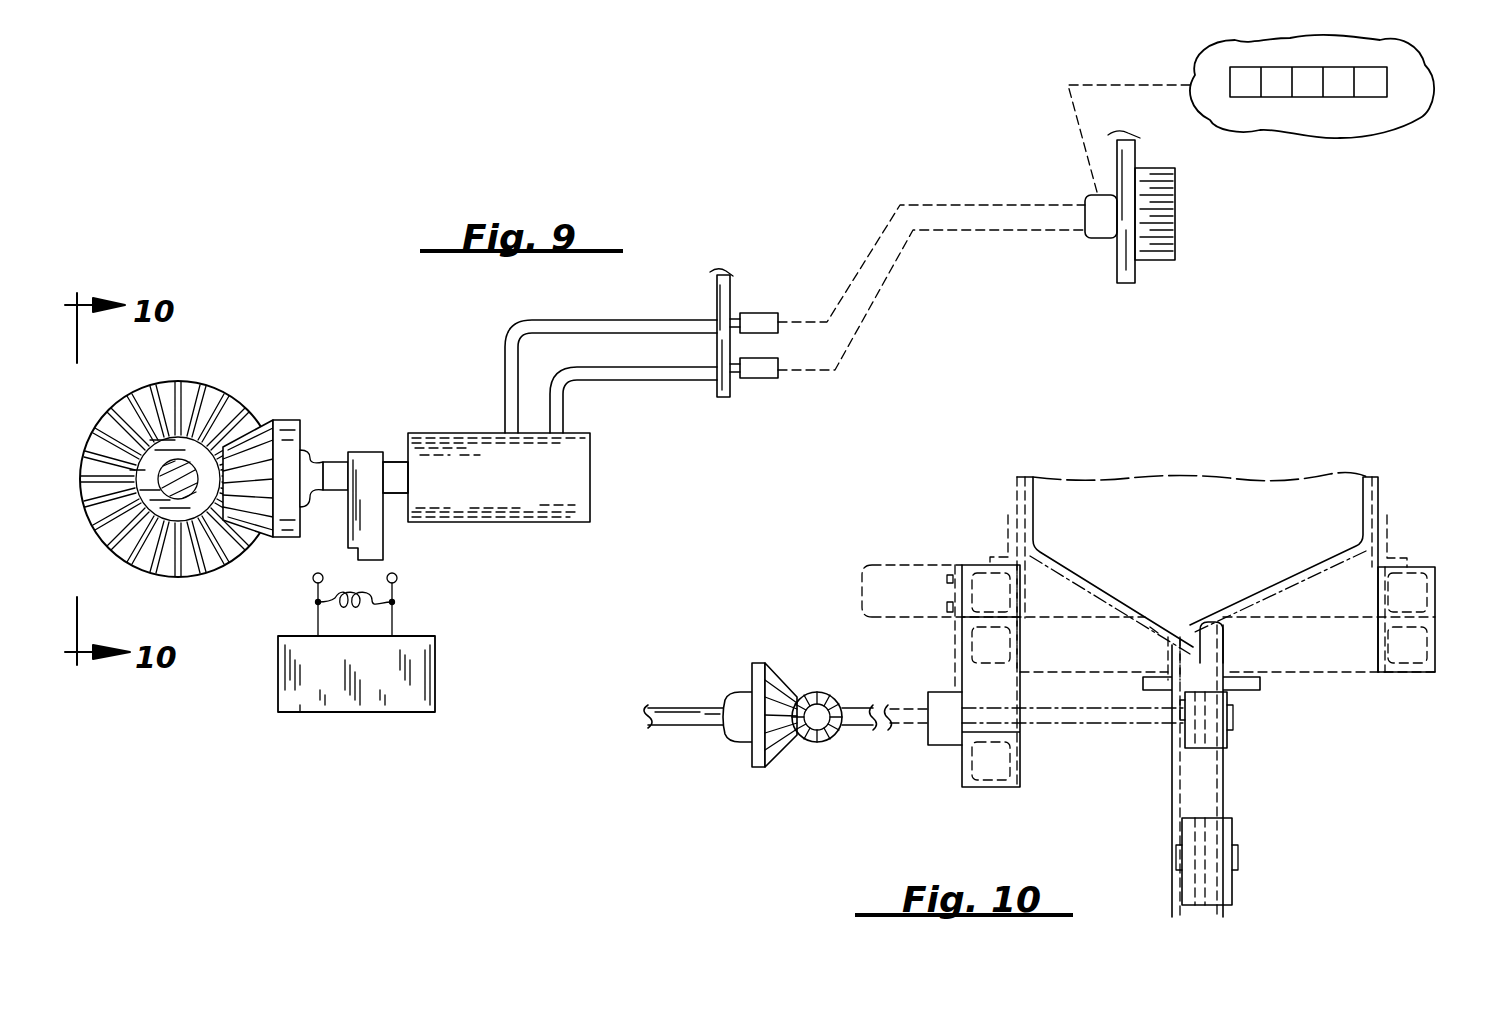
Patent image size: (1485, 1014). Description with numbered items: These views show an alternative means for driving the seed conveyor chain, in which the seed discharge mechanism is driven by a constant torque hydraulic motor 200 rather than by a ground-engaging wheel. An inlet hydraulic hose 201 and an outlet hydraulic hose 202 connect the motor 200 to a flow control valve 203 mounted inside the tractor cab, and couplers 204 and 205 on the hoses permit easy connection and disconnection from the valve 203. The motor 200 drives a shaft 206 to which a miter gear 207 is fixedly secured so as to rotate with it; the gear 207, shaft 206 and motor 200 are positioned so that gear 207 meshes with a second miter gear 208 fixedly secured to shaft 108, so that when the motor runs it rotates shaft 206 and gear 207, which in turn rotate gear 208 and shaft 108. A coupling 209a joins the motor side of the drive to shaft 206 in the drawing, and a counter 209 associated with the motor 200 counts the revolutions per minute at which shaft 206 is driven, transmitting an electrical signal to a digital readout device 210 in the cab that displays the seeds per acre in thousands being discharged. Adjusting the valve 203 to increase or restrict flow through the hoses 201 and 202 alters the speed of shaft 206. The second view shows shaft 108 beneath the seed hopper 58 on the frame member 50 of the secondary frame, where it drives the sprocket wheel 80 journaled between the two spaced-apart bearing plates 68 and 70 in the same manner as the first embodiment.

In FIG. 9, the shaft 108 is at (167, 467).
In FIG. 10, the shaft 108 is at (663, 710).
In FIG. 9, the second miter gear 208 is at (213, 392).
In FIG. 10, the second miter gear 208 is at (765, 765).
In FIG. 9, the miter gear 207 is at (260, 530).
In FIG. 10, the miter gear 207 is at (805, 745).
In FIG. 9, the coupling 209a is at (362, 453).
In FIG. 9, the shaft 206 is at (392, 493).
In FIG. 9, the constant torque hydraulic motor 200 is at (508, 522).
In FIG. 9, the inlet hydraulic hose 201 is at (607, 320).
In FIG. 9, the outlet hydraulic hose 202 is at (608, 380).
In FIG. 9, the coupler 204 is at (748, 313).
In FIG. 9, the coupler 205 is at (747, 378).
In FIG. 9, the flow control valve 203 is at (1177, 210).
In FIG. 9, the digital readout device 210 is at (1277, 98).
In FIG. 9, the counter 209 is at (335, 712).
In FIG. 10, the frame member 50 is at (980, 565).
In FIG. 10, the seed hopper 58 is at (1170, 470).
In FIG. 10, the sprocket wheel 80 is at (1205, 745).
In FIG. 10, the bearing plate 70 is at (1172, 797).
In FIG. 10, the bearing plate 68 is at (1225, 797).